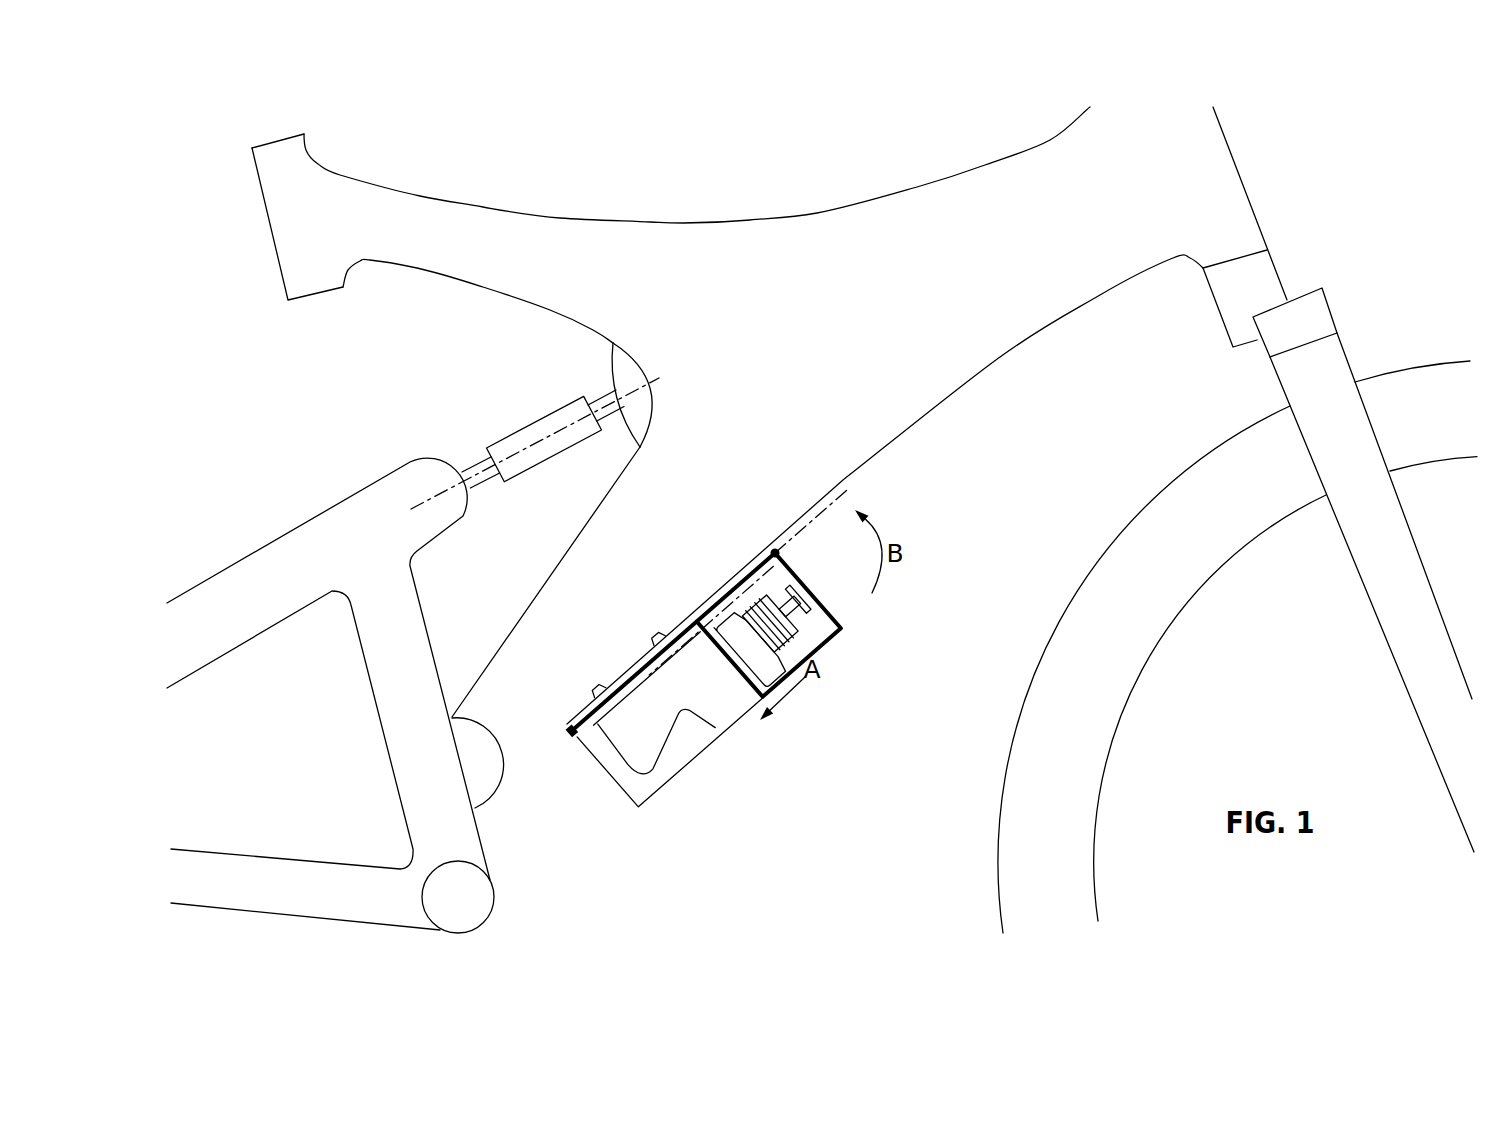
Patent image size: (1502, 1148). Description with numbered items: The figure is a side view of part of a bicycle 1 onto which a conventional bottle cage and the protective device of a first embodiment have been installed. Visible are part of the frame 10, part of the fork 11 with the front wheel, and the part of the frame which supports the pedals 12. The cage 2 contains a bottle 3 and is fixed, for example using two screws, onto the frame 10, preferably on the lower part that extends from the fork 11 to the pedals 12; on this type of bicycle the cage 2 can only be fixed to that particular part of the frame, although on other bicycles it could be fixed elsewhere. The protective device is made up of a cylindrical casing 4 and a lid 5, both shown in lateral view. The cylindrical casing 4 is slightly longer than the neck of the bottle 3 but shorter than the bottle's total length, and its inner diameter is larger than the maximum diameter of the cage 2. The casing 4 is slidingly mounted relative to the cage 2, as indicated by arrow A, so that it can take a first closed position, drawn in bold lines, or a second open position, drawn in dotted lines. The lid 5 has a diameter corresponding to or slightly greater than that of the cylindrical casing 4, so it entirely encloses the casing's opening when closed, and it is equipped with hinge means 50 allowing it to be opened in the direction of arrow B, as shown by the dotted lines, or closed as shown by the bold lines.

The bicycle 1 is at (750, 183).
The cage 2 is at (657, 753).
The bottle 3 is at (720, 710).
The cylindrical casing 4 is at (841, 647).
The lid 5 is at (843, 607).
The hinge means 50 is at (797, 556).
The frame 10 is at (957, 370).
The fork 11 is at (1288, 373).
The part of the frame which supports the pedals 12 is at (472, 900).